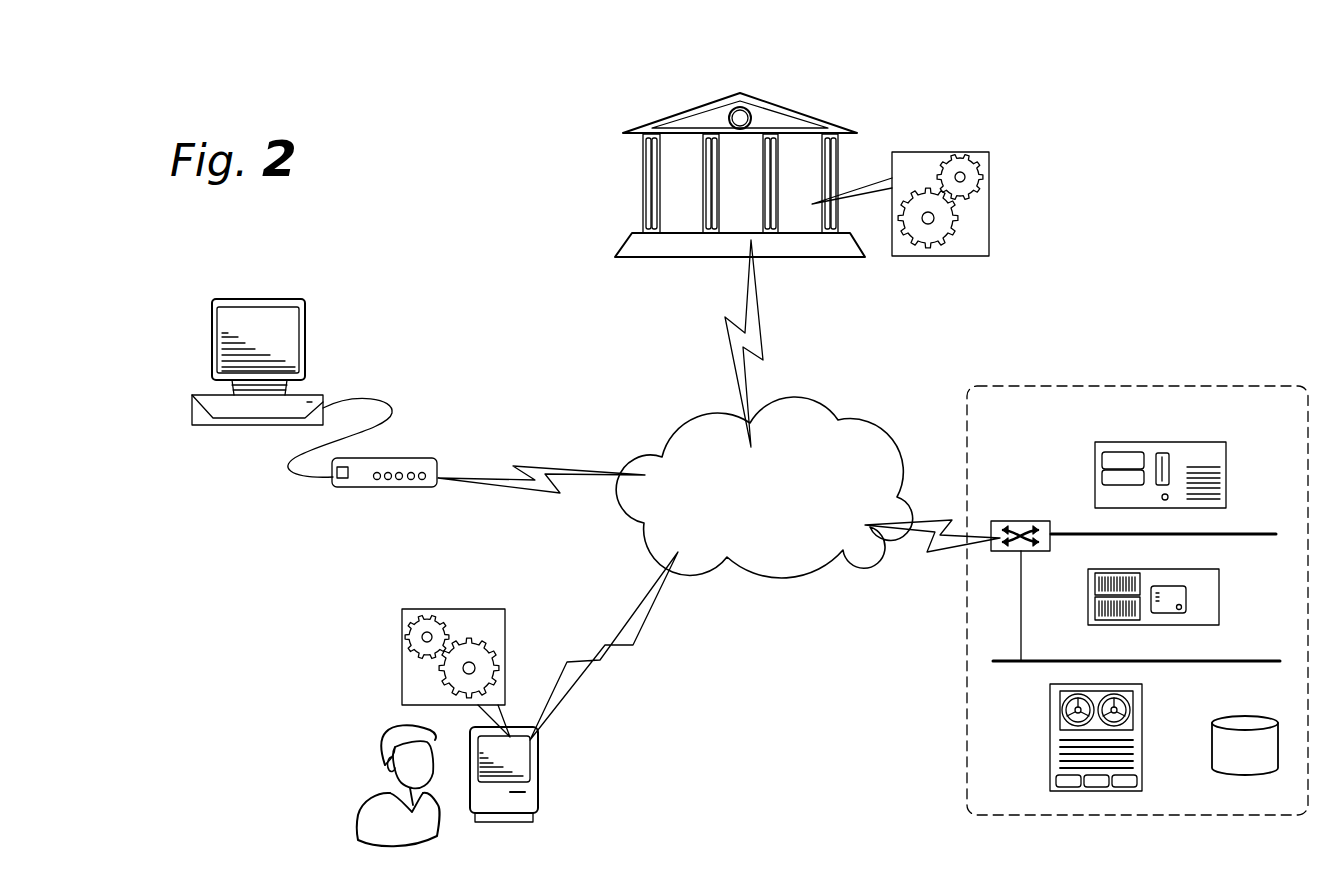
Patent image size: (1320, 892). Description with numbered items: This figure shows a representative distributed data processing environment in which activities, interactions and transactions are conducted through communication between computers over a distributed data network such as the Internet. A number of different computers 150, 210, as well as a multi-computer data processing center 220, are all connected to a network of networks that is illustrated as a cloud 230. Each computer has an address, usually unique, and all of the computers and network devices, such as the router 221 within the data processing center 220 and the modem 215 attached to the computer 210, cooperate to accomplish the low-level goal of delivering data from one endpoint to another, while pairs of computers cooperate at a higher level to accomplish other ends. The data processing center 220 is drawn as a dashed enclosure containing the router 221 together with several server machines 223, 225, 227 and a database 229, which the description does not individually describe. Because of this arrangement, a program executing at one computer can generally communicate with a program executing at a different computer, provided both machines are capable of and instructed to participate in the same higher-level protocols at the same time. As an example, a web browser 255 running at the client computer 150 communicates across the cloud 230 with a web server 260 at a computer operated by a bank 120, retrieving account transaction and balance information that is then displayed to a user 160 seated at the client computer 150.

The bank 120 is at (634, 234).
The web server 260 is at (915, 256).
The computer 210 is at (200, 393).
The modem 215 is at (428, 458).
The cloud 230 is at (862, 468).
The multi-computer data processing center 220 is at (1016, 417).
The router 221 is at (1023, 521).
The server 223 is at (1226, 442).
The server 225 is at (1219, 611).
The server 227 is at (1050, 773).
The database 229 is at (1274, 769).
The web browser 255 is at (402, 695).
The client computer 150 is at (538, 790).
The user 160 is at (357, 822).